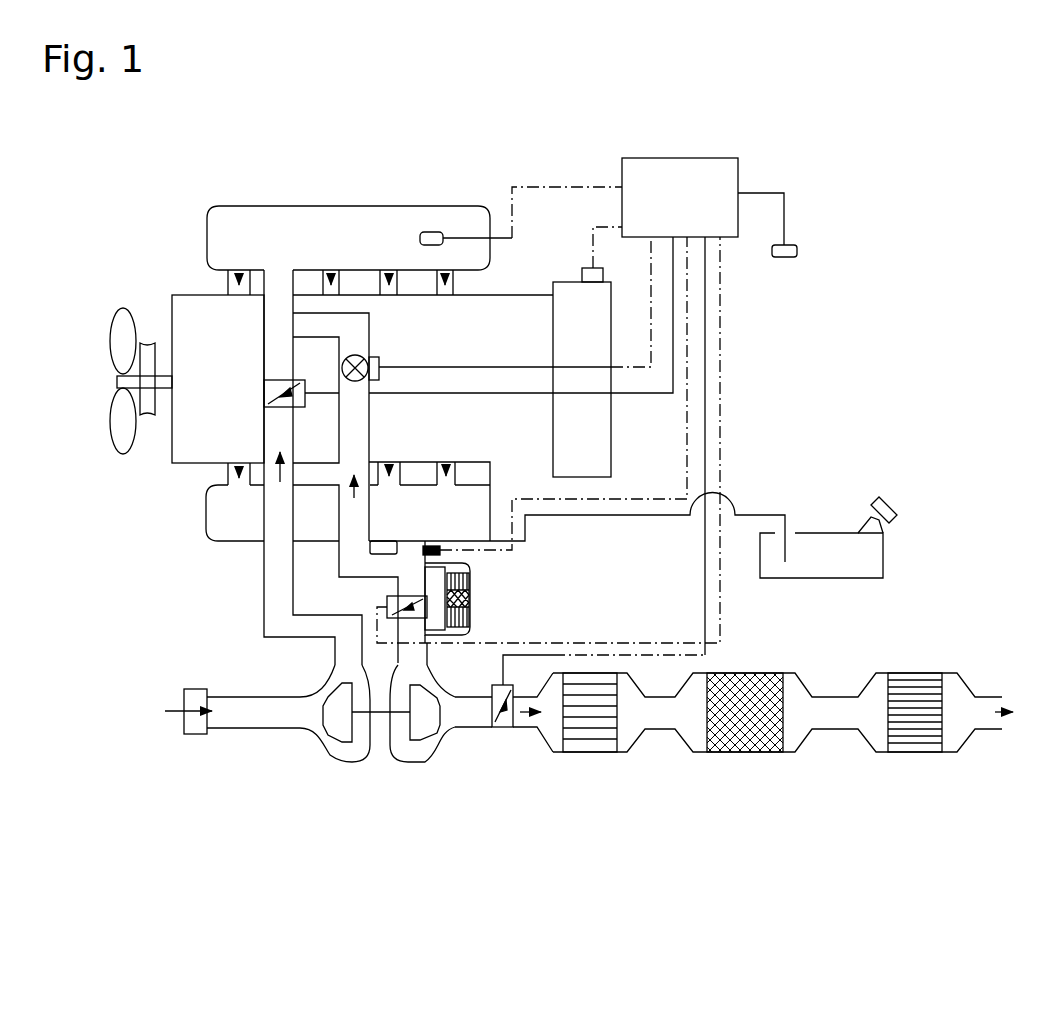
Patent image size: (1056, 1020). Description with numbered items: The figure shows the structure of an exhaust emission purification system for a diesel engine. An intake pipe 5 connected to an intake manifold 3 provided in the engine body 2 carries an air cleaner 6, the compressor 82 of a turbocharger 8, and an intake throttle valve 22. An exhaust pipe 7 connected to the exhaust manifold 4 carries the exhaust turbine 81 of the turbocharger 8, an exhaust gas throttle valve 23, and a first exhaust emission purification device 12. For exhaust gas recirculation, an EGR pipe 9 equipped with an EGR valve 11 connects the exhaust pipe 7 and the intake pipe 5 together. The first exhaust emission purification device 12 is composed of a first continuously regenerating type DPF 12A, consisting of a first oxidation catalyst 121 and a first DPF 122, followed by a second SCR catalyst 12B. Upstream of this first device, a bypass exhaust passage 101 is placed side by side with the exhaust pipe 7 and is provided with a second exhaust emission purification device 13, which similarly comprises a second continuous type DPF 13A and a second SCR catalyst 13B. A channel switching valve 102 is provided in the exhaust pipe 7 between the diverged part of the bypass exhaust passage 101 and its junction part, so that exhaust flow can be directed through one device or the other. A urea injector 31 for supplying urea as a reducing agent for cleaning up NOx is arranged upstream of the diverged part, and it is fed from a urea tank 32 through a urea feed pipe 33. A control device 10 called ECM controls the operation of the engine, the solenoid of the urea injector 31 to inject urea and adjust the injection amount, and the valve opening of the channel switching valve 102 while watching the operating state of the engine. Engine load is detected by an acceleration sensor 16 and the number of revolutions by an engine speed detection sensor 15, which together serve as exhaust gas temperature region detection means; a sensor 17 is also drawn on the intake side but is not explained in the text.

The engine body 2 is at (172, 455).
The intake manifold 3 is at (206, 222).
The exhaust manifold 4 is at (225, 542).
The intake pipe 5 is at (274, 435).
The air cleaner 6 is at (200, 735).
The exhaust pipe 7 is at (430, 658).
The turbocharger 8 is at (381, 748).
The exhaust turbine 81 is at (430, 750).
The compressor 82 is at (331, 750).
The EGR pipe 9 is at (370, 430).
The control device 10 is at (728, 237).
The EGR valve 11 is at (382, 358).
The first exhaust emission purification device 12 is at (783, 800).
The first continuously regenerating type DPF 12A is at (684, 772).
The second SCR catalyst 12B is at (928, 745).
The first oxidation catalyst 121 is at (612, 752).
The first DPF 122 is at (745, 743).
The second exhaust emission purification device 13 is at (508, 440).
The second continuous type DPF 13A is at (517, 598).
The second SCR catalyst 13B is at (553, 612).
The engine speed detection sensor 15 is at (580, 268).
The acceleration sensor 16 is at (790, 258).
The intake pressure sensor 17 is at (420, 238).
The intake throttle valve 22 is at (264, 386).
The exhaust gas throttle valve 23 is at (500, 729).
The urea injector 31 is at (426, 546).
The urea tank 32 is at (830, 533).
The urea feed pipe 33 is at (760, 514).
The bypass exhaust passage 101 is at (470, 567).
The channel switching valve 102 is at (386, 597).